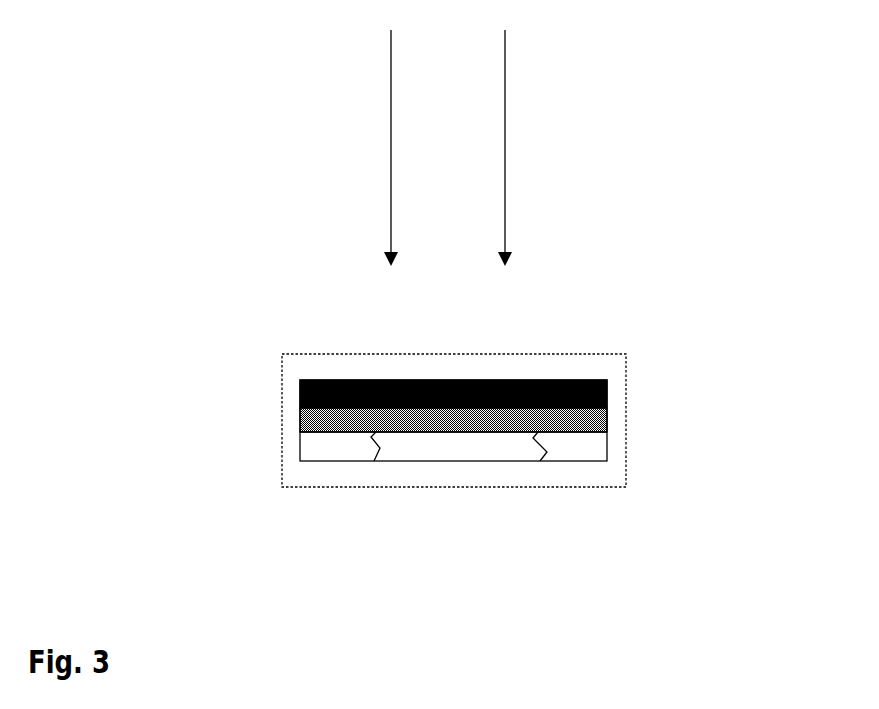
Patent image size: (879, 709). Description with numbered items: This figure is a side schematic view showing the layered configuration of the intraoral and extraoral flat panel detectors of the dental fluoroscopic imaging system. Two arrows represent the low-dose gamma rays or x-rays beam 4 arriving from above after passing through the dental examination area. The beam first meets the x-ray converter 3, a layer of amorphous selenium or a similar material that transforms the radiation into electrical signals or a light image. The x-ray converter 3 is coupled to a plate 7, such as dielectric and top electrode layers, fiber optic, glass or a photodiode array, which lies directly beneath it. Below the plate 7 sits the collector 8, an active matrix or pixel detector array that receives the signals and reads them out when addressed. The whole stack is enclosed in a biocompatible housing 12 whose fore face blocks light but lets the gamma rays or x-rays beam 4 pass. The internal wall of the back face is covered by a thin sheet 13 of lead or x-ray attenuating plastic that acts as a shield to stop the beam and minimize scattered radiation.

The x-ray converter 3 is at (606, 381).
The gamma rays or x-rays beam 4 is at (505, 187).
The plate 7 is at (607, 425).
The collector 8 is at (607, 452).
The biocompatible housing 12 is at (282, 398).
The thin sheet 13 is at (588, 468).